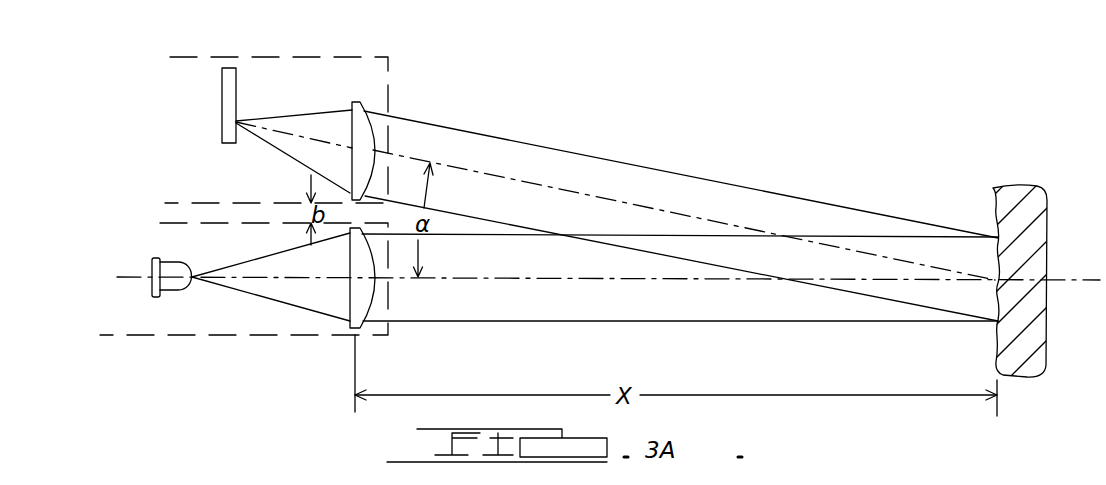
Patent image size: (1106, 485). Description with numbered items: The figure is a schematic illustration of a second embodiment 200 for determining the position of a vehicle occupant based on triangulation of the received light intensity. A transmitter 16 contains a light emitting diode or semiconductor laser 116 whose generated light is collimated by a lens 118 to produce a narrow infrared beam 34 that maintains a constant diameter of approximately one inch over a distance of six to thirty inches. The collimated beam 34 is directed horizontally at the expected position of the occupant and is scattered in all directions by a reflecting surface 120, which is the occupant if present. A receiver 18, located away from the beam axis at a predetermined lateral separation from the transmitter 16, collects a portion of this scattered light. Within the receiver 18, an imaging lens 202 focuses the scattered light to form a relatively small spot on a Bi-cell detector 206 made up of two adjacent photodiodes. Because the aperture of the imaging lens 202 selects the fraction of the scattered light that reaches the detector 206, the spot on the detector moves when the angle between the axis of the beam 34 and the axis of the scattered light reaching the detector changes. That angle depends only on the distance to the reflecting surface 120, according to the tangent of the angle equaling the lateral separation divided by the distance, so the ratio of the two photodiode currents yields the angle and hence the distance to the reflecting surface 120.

The transmitter 16 is at (206, 345).
The receiver 18 is at (176, 55).
The infrared beam 34 is at (730, 325).
The light emitting diode or semiconductor laser 116 is at (166, 254).
The lens 118 is at (339, 333).
The reflecting surface 120 is at (996, 198).
The second embodiment 200 is at (936, 140).
The imaging lens 202 is at (370, 98).
The Bi-cell detector 206 is at (214, 115).